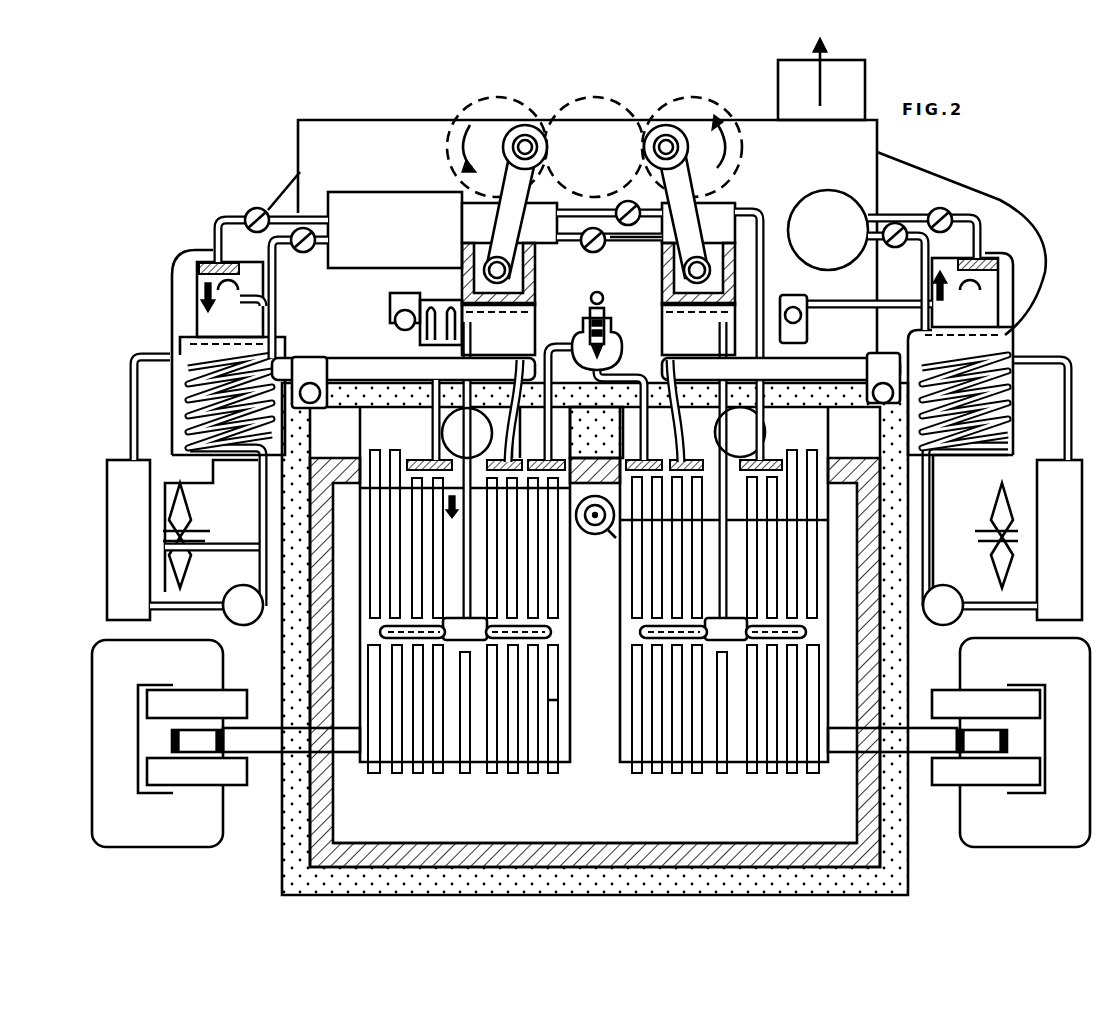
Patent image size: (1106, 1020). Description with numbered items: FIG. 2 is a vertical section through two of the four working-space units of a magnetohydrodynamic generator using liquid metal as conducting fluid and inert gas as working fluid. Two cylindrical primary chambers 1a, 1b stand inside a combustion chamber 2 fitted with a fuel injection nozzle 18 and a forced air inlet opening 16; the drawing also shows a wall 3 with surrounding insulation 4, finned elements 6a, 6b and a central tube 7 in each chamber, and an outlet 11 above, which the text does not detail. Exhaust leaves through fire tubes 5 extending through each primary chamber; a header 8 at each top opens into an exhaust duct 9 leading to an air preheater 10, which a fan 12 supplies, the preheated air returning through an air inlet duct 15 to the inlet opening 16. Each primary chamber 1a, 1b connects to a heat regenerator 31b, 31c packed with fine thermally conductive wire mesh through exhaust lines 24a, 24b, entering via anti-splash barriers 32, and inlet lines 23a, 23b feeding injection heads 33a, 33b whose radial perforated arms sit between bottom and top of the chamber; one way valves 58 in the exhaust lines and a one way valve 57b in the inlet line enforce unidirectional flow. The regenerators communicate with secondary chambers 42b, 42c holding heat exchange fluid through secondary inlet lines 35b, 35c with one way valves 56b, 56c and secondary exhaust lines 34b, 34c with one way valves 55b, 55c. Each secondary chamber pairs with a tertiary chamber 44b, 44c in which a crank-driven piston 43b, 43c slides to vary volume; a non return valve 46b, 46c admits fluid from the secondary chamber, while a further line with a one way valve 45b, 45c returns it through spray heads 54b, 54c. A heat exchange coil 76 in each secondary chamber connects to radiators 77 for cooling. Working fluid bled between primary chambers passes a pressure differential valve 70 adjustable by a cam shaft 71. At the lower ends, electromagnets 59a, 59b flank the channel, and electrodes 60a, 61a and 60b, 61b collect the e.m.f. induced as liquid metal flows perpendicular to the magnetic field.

The primary chamber 1a is at (582, 570).
The primary chamber 1b is at (609, 689).
The combustion chamber 2 is at (595, 819).
The furnace wall 3 is at (686, 853).
The insulation 4 is at (298, 822).
The fire tubes 5 is at (560, 722).
The lower fins 6a is at (472, 768).
The upper fins 6b is at (385, 455).
The central tube 7 is at (474, 492).
The header 8 is at (666, 432).
The exhaust duct 9 is at (603, 432).
The air preheater 10 is at (572, 245).
The exhaust outlet 11 is at (821, 79).
The fan 12 is at (961, 243).
The air inlet duct 15 is at (590, 523).
The forced air inlet opening 16 is at (612, 544).
The fuel injection nozzle 18 is at (595, 507).
The inlet line 23a is at (440, 306).
The inlet line 23b is at (618, 244).
The exhaust line 24a is at (410, 300).
The exhaust line 24b is at (757, 210).
The heat regenerator 31b is at (395, 230).
The heat regenerator 31c is at (828, 230).
The anti-splash barrier 32 is at (410, 458).
The injection head 33a is at (552, 632).
The injection head 33b is at (760, 637).
The secondary exhaust line 34b is at (216, 236).
The secondary exhaust line 34c is at (908, 213).
The secondary inlet line 35b is at (275, 243).
The secondary inlet line 35c is at (922, 282).
The secondary chamber 42b is at (196, 326).
The secondary chamber 42c is at (1013, 340).
The piston 43b is at (463, 258).
The piston 43c is at (662, 300).
The tertiary chamber 44b is at (463, 223).
The tertiary chamber 44c is at (662, 347).
The one way valve 45b is at (396, 323).
The one way valve 45c is at (856, 309).
The non return valve 46b is at (310, 358).
The non return valve 46c is at (872, 357).
The spray head 54b is at (232, 298).
The spray head 54c is at (972, 298).
The one way valve 55b is at (252, 210).
The one way valve 55c is at (938, 206).
The one way valve 56b is at (300, 253).
The one way valve 56c is at (888, 247).
The one way valve 57b is at (609, 249).
The one way valve 58 is at (197, 741).
The electromagnet 59a is at (169, 743).
The electromagnet 59b is at (1011, 742).
The electrode 60a is at (172, 745).
The electrode 60b is at (1010, 745).
The electrode 61a is at (291, 741).
The electrode 61b is at (892, 741).
The pressure differential valve 70 is at (596, 384).
The cam shaft 71 is at (597, 288).
The heat exchange coil 76 is at (192, 431).
The radiator 77 is at (594, 540).